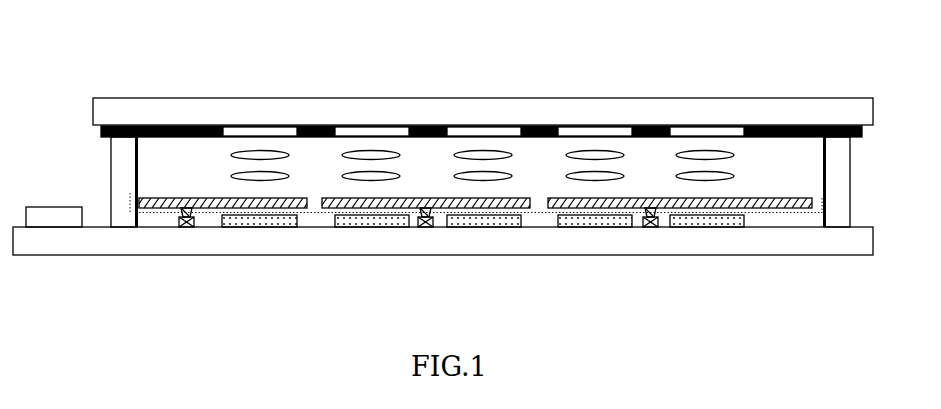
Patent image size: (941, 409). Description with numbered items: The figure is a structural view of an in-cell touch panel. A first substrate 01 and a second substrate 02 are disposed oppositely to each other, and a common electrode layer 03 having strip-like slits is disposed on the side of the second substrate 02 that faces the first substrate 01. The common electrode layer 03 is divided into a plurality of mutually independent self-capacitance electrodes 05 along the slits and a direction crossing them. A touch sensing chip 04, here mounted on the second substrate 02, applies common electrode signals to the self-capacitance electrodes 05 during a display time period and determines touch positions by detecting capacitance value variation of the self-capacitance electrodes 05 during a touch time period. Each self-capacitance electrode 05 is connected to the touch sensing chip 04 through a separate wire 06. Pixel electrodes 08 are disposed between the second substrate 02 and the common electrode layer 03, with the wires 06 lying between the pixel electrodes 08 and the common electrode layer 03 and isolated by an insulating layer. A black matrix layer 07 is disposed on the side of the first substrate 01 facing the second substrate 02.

The first substrate 01 is at (483, 77).
The second substrate 02 is at (443, 275).
The common electrode layer 03 is at (130, 203).
The touch sensing chip 04 is at (87, 260).
The self-capacitance electrodes 05 is at (493, 247).
The wires 06 is at (418, 261).
The black matrix layer 07 is at (481, 99).
The pixel electrodes 08 is at (483, 269).